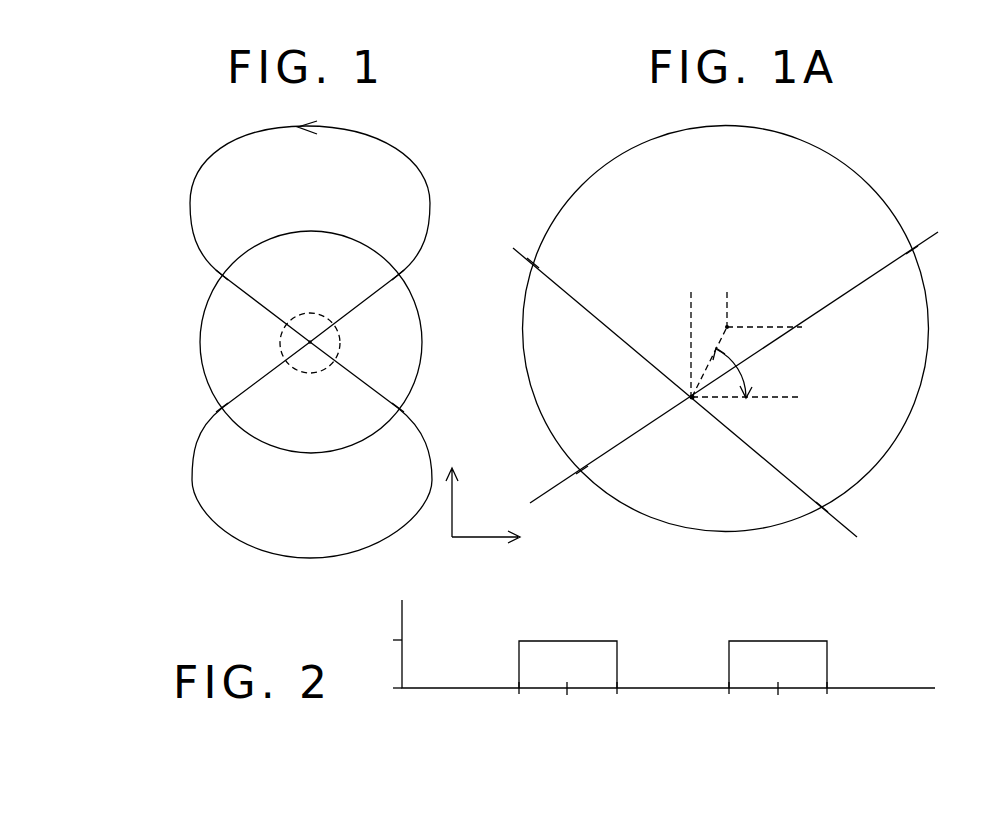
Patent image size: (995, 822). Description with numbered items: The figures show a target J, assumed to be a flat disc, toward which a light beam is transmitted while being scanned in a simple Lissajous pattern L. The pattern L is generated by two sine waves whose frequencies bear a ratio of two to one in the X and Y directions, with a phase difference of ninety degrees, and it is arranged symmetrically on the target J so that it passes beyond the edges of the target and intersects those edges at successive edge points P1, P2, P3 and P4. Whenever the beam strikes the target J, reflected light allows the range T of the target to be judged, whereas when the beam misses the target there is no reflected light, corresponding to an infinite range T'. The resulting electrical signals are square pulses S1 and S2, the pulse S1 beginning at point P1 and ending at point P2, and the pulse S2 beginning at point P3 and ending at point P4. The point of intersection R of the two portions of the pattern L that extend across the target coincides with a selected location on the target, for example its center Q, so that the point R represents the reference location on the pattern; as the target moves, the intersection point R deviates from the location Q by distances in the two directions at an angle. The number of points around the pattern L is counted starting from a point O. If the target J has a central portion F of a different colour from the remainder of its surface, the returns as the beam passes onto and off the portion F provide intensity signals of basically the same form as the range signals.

In FIG. 1, the Lissajous pattern L is at (397, 150).
In FIG. 1, the starting point O is at (190, 207).
In FIG. 1, the target J is at (203, 342).
In FIG. 1A, the target J is at (905, 428).
In FIG. 1, the central portion F is at (300, 316).
In FIG. 1, the point of intersection R is at (317, 345).
In FIG. 1A, the point of intersection R is at (690, 402).
In FIG. 1, the center Q is at (310, 342).
In FIG. 1A, the center Q is at (729, 325).
In FIG. 1, the first edge point P1 is at (220, 275).
In FIG. 1A, the first edge point P1 is at (537, 258).
In FIG. 2, the first edge point P1 is at (519, 690).
In FIG. 1, the second edge point P2 is at (400, 409).
In FIG. 1A, the second edge point P2 is at (825, 506).
In FIG. 2, the second edge point P2 is at (617, 690).
In FIG. 1, the third edge point P3 is at (220, 408).
In FIG. 1A, the third edge point P3 is at (583, 467).
In FIG. 2, the third edge point P3 is at (729, 690).
In FIG. 1, the fourth edge point P4 is at (401, 277).
In FIG. 1A, the fourth edge point P4 is at (909, 249).
In FIG. 2, the fourth edge point P4 is at (827, 690).
In FIG. 1, the X direction X is at (499, 537).
In FIG. 1, the Y direction Y is at (450, 487).
In FIG. 2, the target range T is at (385, 640).
In FIG. 2, the infinite range T' is at (385, 688).
In FIG. 2, the first square pulse S1 is at (583, 640).
In FIG. 2, the second square pulse S2 is at (787, 640).